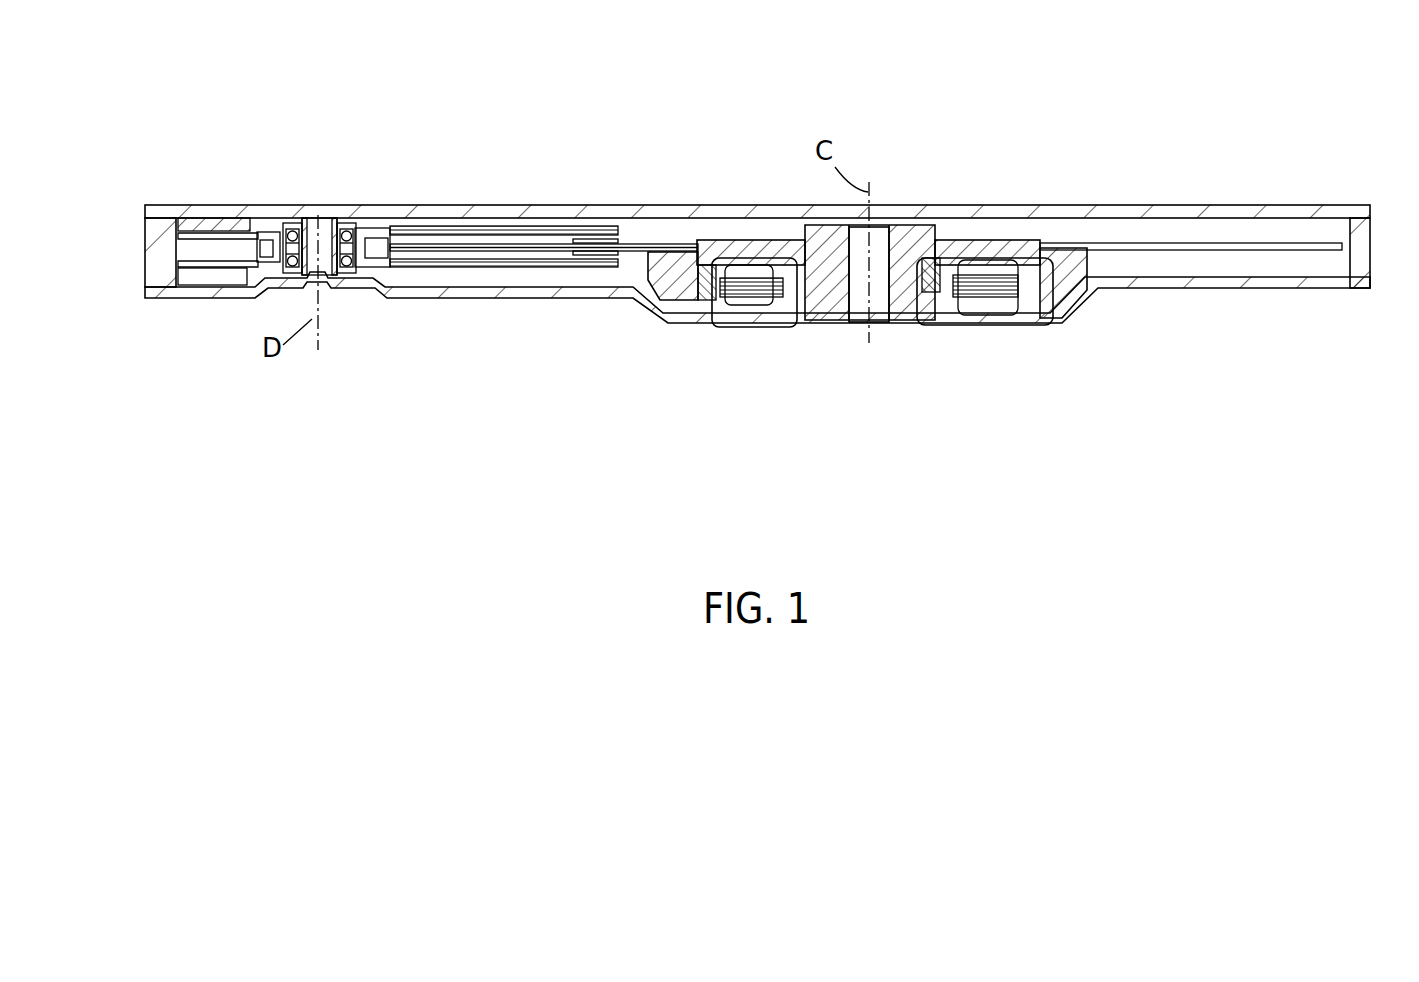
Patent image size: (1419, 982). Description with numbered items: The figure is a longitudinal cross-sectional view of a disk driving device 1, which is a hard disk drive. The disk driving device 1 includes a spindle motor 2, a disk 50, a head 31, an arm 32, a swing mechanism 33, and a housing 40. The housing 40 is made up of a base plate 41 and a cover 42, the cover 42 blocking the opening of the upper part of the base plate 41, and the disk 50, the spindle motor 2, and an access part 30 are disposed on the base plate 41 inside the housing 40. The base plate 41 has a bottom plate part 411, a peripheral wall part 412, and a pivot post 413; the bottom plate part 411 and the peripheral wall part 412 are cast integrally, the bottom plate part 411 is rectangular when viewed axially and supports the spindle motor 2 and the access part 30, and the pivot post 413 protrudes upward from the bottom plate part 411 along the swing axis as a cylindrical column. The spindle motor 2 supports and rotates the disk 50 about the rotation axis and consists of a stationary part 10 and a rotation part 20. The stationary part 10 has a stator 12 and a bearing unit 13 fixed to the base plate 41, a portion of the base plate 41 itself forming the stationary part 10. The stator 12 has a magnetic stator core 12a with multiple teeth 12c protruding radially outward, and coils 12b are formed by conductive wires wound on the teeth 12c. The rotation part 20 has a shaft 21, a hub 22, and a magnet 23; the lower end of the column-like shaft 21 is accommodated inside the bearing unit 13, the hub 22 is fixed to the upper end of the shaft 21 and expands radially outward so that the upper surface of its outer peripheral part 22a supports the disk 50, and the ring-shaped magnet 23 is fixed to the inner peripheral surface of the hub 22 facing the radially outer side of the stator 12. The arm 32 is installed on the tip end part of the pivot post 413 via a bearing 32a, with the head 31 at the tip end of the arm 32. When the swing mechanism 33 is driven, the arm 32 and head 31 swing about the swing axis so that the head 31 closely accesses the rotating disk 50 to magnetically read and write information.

The disk driving device 1 is at (1265, 108).
The spindle motor 2 is at (857, 360).
The stationary part 10 is at (818, 342).
The stator 12 is at (1062, 398).
The stator core 12a is at (1012, 312).
The coils 12b is at (982, 308).
The teeth 12c is at (722, 322).
The bearing unit 13 is at (910, 312).
The rotation part 20 is at (728, 236).
The shaft 21 is at (880, 226).
The hub 22 is at (995, 250).
The outer peripheral part 22a is at (668, 252).
The magnet 23 is at (1040, 248).
The access part 30 is at (352, 276).
The head 31 is at (585, 244).
The arm 32 is at (515, 222).
The bearing 32a is at (347, 222).
The swing mechanism 33 is at (222, 218).
The housing 40 is at (1415, 128).
The base plate 41 is at (1372, 284).
The cover 42 is at (1290, 205).
The disk 50 is at (1140, 252).
The bottom plate part 411 is at (162, 296).
The peripheral wall part 412 is at (150, 262).
The pivot post 413 is at (311, 220).